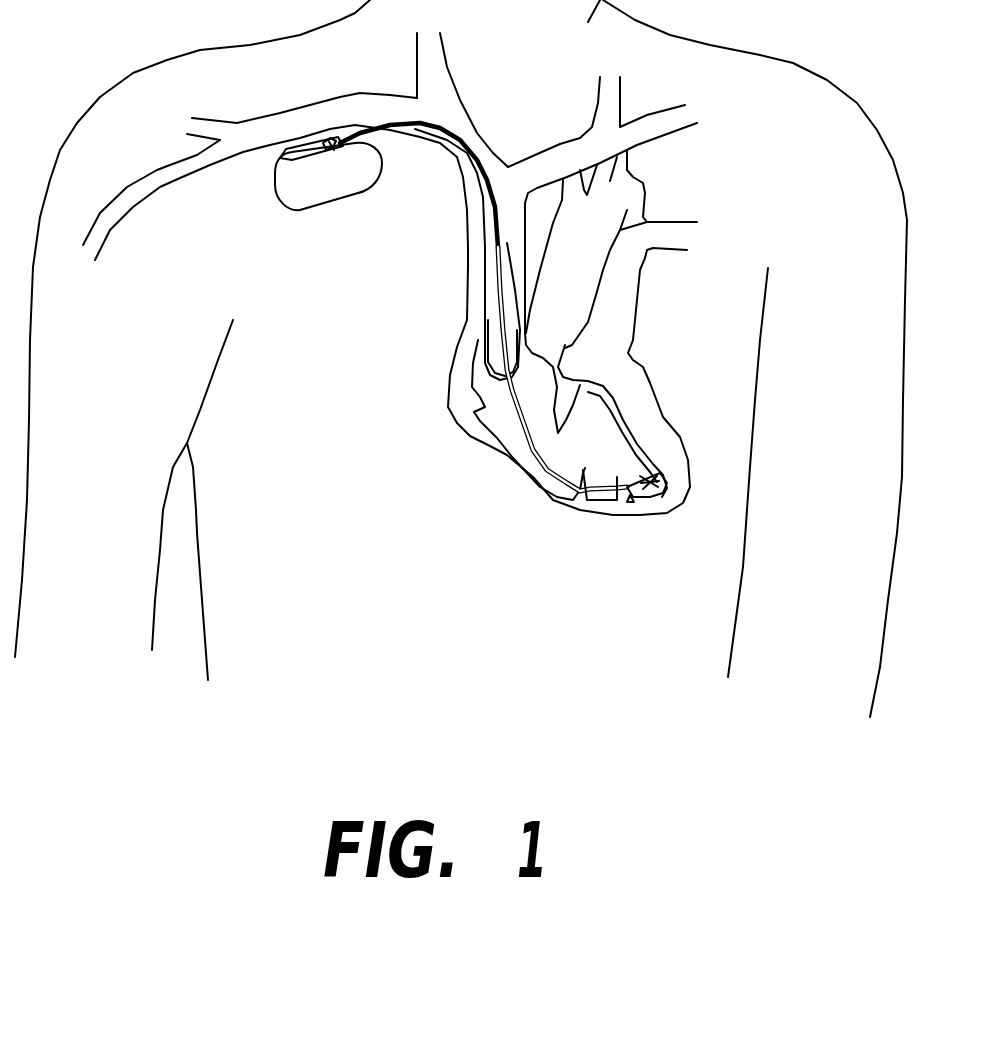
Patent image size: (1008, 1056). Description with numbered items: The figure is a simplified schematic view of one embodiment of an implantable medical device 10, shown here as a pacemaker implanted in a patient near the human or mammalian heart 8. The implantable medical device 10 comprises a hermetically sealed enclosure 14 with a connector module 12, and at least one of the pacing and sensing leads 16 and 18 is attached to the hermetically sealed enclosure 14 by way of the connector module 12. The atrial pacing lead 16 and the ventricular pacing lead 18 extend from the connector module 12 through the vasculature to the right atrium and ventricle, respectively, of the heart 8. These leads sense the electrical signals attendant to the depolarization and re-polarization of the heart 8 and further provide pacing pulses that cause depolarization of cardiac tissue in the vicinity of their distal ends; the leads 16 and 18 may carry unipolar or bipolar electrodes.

The heart 8 is at (670, 418).
The implantable medical device 10 is at (398, 312).
The connector module 12 is at (278, 160).
The hermetically sealed enclosure 14 is at (337, 201).
The atrial pacing lead 16 is at (503, 312).
The ventricular pacing lead 18 is at (518, 412).